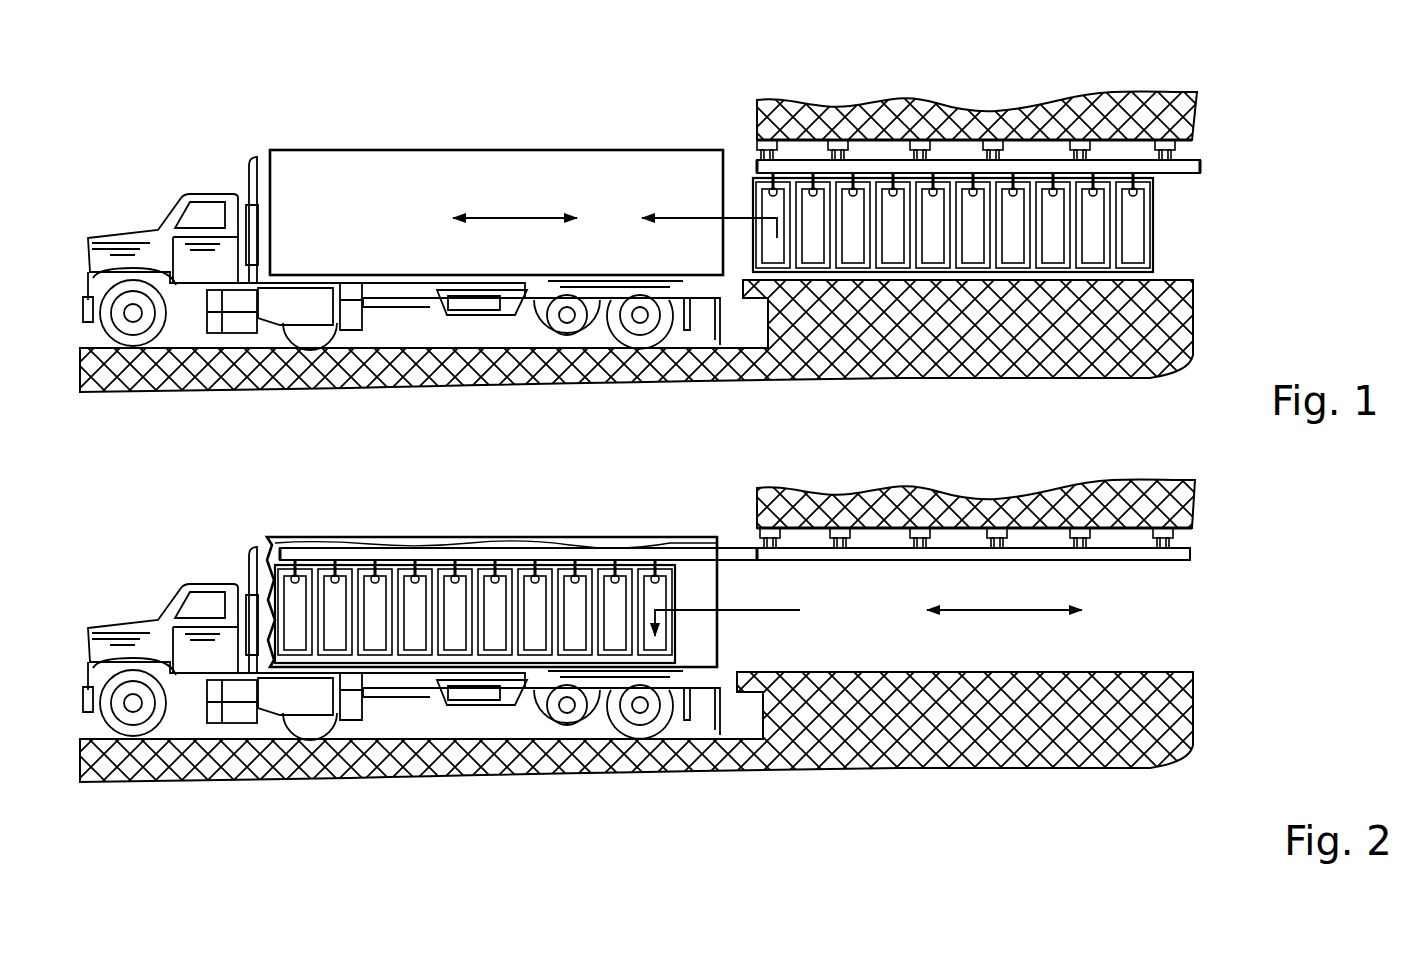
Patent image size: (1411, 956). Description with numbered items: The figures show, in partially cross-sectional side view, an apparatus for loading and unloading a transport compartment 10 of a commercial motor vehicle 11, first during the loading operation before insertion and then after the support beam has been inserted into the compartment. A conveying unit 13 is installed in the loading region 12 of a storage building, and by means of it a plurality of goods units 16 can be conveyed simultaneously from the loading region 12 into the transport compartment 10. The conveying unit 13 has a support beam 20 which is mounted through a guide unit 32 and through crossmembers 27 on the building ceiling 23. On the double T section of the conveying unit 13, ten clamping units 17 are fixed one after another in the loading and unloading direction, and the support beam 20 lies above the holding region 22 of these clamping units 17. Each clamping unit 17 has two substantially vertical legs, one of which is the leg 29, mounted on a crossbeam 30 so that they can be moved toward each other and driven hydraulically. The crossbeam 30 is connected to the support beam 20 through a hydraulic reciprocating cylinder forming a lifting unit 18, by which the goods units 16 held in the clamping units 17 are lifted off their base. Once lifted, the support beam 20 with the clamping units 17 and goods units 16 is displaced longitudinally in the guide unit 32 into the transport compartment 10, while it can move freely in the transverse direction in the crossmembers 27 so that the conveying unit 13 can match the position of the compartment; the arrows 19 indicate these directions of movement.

In FIG. 1, the transport compartment 10 is at (377, 208).
In FIG. 2, the transport compartment 10 is at (692, 577).
In FIG. 1, the commercial motor vehicle 11 is at (227, 167).
In FIG. 2, the commercial motor vehicle 11 is at (212, 558).
In FIG. 1, the loading region 12 is at (1193, 265).
In FIG. 2, the loading region 12 is at (1160, 660).
In FIG. 1, the conveying unit 13 is at (1012, 147).
In FIG. 2, the conveying unit 13 is at (1028, 535).
In FIG. 1, the goods unit 16 is at (1117, 270).
In FIG. 2, the goods unit 16 is at (673, 663).
In FIG. 1, the clamping unit 17 is at (937, 272).
In FIG. 2, the clamping unit 17 is at (553, 663).
In FIG. 1, the lifting unit 18 is at (1138, 172).
In FIG. 2, the lifting unit 18 is at (567, 558).
In FIG. 1, the direction of movement 19 is at (512, 216).
In FIG. 2, the direction of movement 19 is at (993, 610).
In FIG. 1, the support beam 20 is at (911, 167).
In FIG. 2, the support beam 20 is at (480, 555).
In FIG. 1, the holding region 22 is at (1150, 207).
In FIG. 2, the holding region 22 is at (683, 640).
In FIG. 1, the building ceiling 23 is at (790, 125).
In FIG. 2, the building ceiling 23 is at (1137, 515).
In FIG. 1, the crossmember 27 is at (758, 140).
In FIG. 2, the crossmember 27 is at (757, 527).
In FIG. 1, the leg 29 is at (1017, 250).
In FIG. 2, the leg 29 is at (457, 638).
In FIG. 1, the crossbeam 30 is at (1093, 178).
In FIG. 2, the crossbeam 30 is at (377, 577).
In FIG. 1, the guide unit 32 is at (840, 158).
In FIG. 2, the guide unit 32 is at (837, 530).